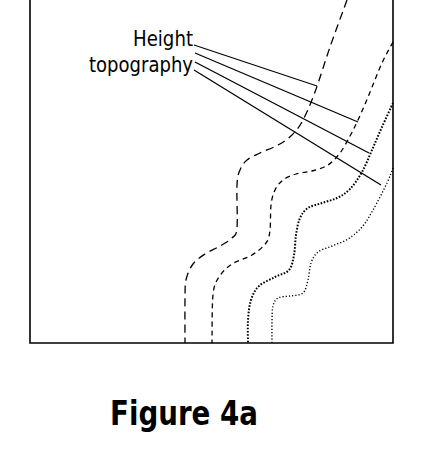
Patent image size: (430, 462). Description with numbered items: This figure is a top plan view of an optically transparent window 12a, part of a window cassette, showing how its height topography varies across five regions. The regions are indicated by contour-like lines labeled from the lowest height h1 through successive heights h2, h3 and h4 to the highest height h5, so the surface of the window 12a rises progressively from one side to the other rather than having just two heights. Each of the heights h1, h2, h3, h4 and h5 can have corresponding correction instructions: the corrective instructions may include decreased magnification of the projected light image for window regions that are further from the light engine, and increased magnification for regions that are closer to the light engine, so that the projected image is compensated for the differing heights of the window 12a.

The optically transparent window 12a is at (303, 320).
The lowest height region h1 is at (266, 171).
The second height region h2 is at (302, 192).
The third height region h3 is at (320, 223).
The fourth height region h4 is at (332, 255).
The highest height region h5 is at (365, 252).